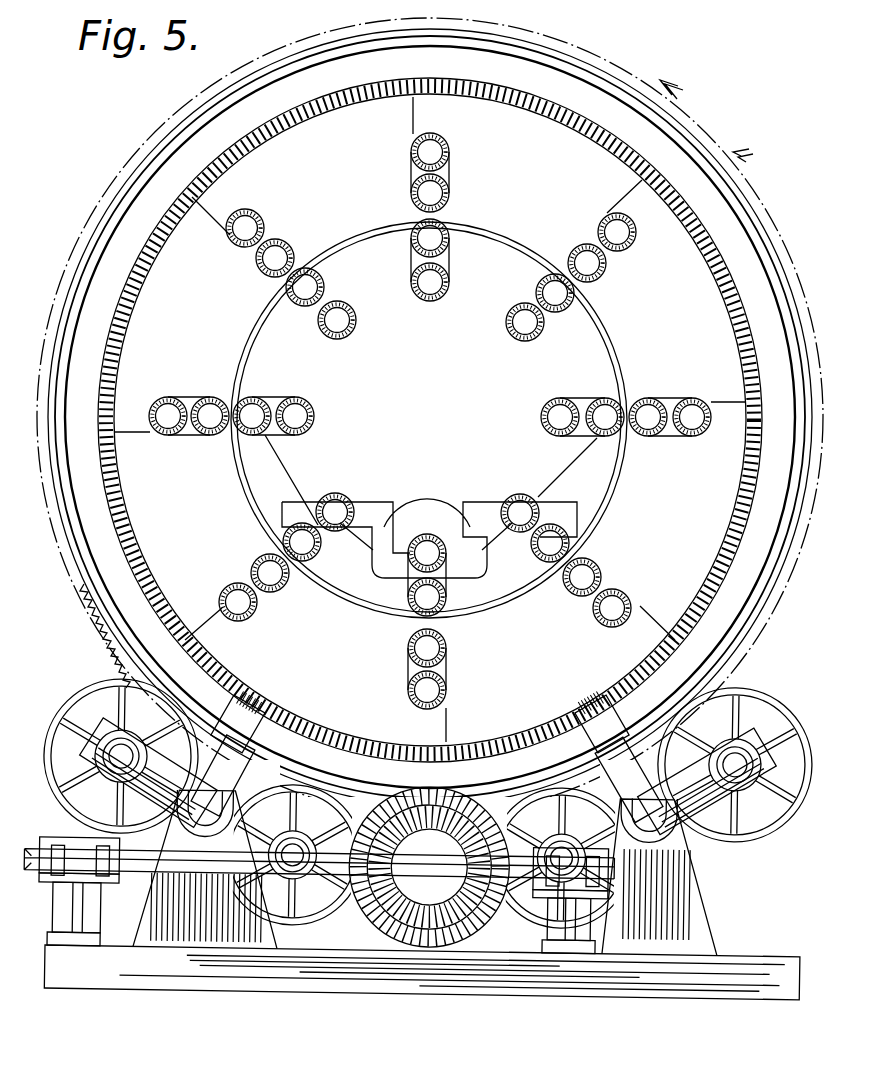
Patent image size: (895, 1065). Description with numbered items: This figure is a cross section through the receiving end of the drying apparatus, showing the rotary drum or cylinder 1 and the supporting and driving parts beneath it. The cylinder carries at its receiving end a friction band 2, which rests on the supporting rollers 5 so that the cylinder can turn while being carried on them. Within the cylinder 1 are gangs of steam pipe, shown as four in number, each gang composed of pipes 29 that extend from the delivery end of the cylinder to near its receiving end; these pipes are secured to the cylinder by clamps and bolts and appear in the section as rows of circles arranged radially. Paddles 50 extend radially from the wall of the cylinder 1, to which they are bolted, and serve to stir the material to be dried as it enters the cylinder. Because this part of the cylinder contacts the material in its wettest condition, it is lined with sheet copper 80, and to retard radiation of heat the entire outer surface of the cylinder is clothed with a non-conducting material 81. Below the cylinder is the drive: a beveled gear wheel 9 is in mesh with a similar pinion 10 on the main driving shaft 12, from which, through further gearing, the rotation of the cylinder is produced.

The rotary drum or cylinder 1 is at (752, 508).
The friction band 2 is at (766, 257).
The supporting rollers 5 is at (790, 706).
The beveled gear wheel 9 is at (480, 935).
The pinion 10 is at (512, 903).
The main driving shaft 12 is at (215, 866).
The steam pipes 29 is at (232, 438).
The paddles 50 is at (448, 700).
The sheet copper lining 80 is at (282, 712).
The non-conducting material 81 is at (713, 623).